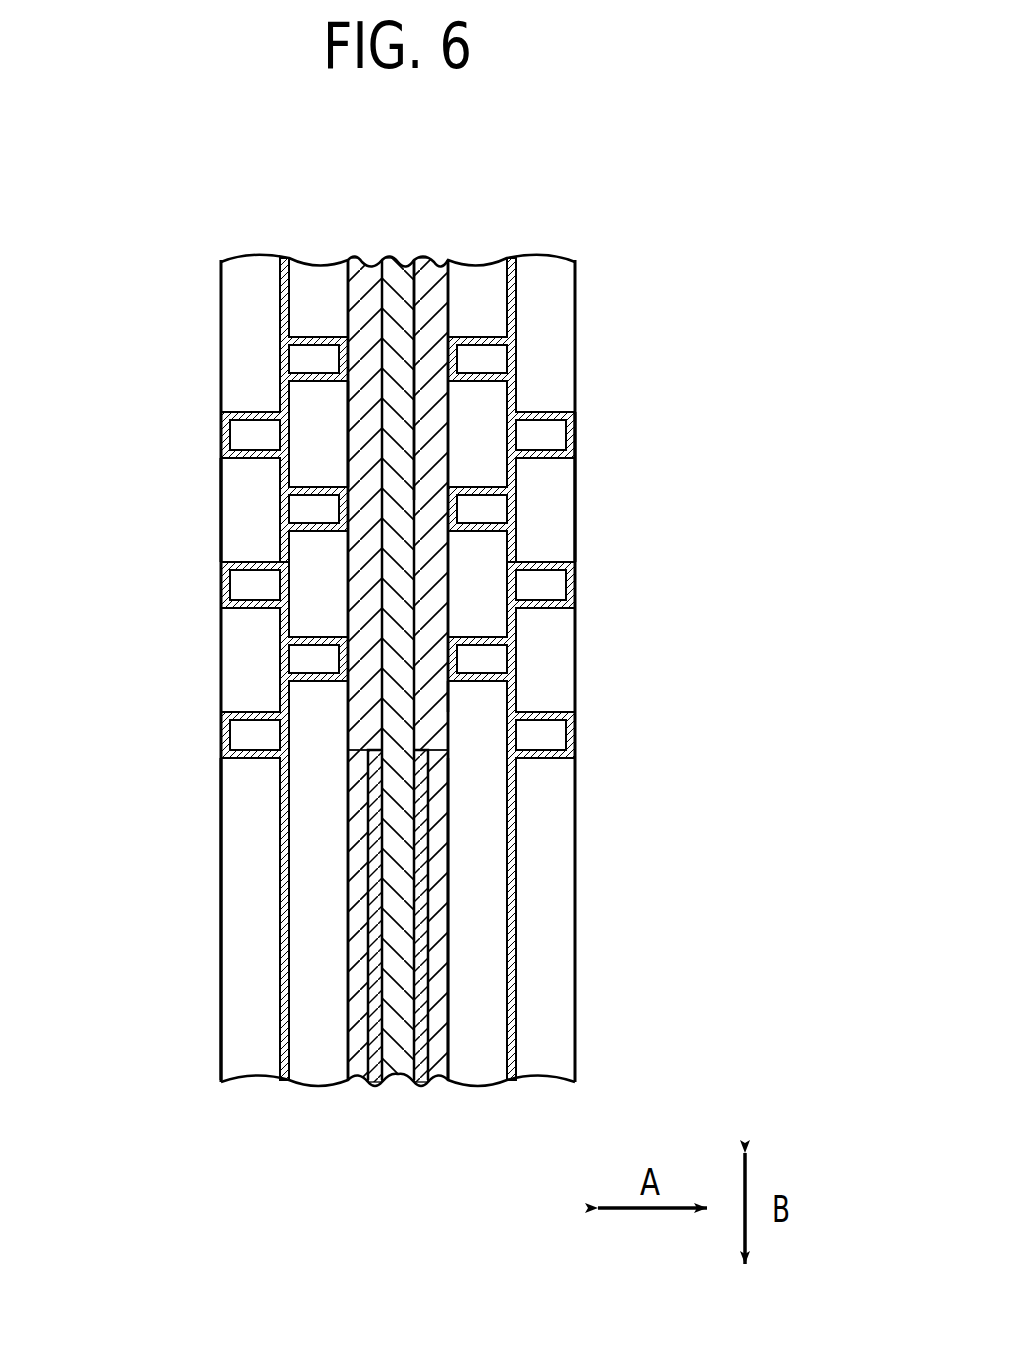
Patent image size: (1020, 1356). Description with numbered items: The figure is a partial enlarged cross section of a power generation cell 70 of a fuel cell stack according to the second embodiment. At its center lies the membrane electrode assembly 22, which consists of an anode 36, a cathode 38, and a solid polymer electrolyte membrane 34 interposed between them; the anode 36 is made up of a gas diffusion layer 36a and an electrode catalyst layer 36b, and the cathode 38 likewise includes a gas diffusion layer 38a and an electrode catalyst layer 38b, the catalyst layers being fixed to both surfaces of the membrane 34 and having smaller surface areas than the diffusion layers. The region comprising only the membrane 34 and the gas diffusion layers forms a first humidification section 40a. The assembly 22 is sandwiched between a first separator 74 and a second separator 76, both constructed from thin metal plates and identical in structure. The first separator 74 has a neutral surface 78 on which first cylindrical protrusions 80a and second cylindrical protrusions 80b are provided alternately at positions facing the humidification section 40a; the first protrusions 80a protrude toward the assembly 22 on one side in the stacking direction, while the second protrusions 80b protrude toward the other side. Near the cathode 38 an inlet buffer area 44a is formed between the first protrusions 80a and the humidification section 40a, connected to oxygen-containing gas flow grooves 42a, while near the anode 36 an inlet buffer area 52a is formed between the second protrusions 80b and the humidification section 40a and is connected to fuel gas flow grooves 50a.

The power generation cell 70 is at (630, 142).
The second separator 76 is at (284, 252).
The first separator 74 is at (512, 252).
The first cylindrical protrusions 80a is at (330, 333).
The second cylindrical protrusions 80b is at (262, 562).
The inlet buffer area 52a is at (289, 386).
The first humidification section 40a is at (440, 411).
The inlet buffer area 44a is at (244, 495).
The neutral surface 78 is at (517, 623).
The fuel gas flow grooves 50a is at (322, 793).
The oxygen-containing gas flow grooves 42a is at (245, 870).
The anode 36 is at (122, 952).
The gas diffusion layer 36a is at (355, 992).
The electrode catalyst layer 36b is at (375, 943).
The solid polymer electrolyte membrane 34 is at (400, 1052).
The cathode 38 is at (675, 950).
The gas diffusion layer 38a is at (440, 997).
The electrode catalyst layer 38b is at (428, 940).
The membrane electrode assembly 22 is at (495, 1183).